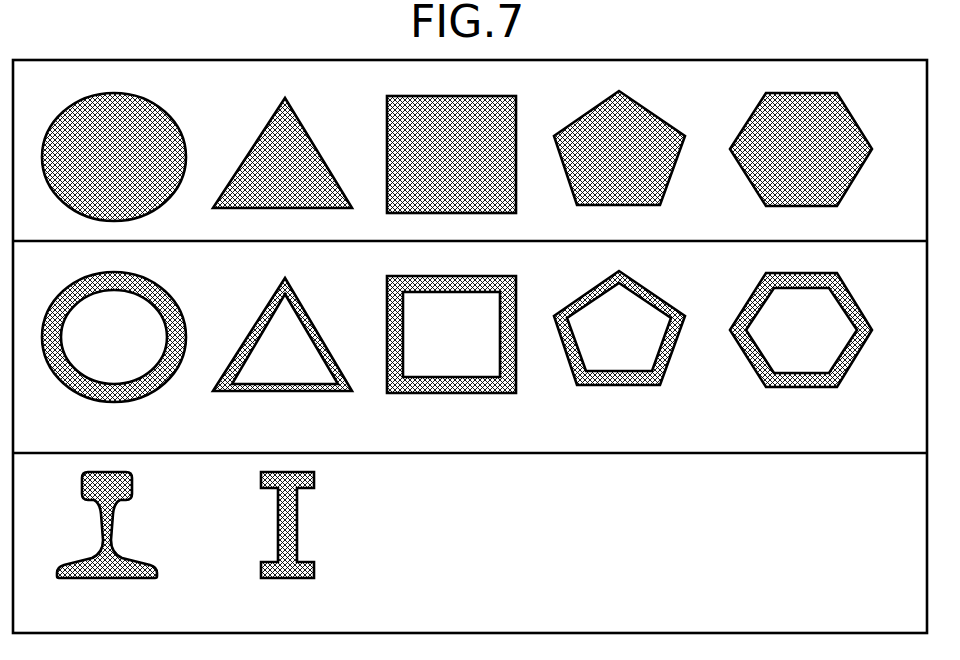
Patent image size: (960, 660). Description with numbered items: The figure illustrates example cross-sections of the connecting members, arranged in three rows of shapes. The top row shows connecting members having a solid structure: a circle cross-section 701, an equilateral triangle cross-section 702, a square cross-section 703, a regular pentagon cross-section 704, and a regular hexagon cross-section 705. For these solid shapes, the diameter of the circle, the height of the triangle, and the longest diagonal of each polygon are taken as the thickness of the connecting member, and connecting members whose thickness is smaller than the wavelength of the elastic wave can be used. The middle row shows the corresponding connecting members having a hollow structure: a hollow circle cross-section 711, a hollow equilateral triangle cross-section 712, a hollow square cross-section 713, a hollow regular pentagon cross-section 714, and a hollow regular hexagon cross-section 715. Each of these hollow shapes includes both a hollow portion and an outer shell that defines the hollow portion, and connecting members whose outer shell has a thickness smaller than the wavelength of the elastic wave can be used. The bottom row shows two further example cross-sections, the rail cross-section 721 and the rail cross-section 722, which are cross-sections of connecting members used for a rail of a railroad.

The circle cross-section 701 is at (183, 137).
The equilateral triangle cross-section 702 is at (306, 125).
The square cross-section 703 is at (460, 96).
The regular pentagon cross-section 704 is at (655, 115).
The regular hexagon cross-section 705 is at (852, 115).
The hollow circle cross-section 711 is at (183, 317).
The hollow equilateral triangle cross-section 712 is at (306, 305).
The hollow square cross-section 713 is at (460, 276).
The hollow regular pentagon cross-section 714 is at (655, 295).
The hollow regular hexagon cross-section 715 is at (852, 295).
The rail cross-section 721 is at (133, 482).
The rail cross-section 722 is at (314, 478).